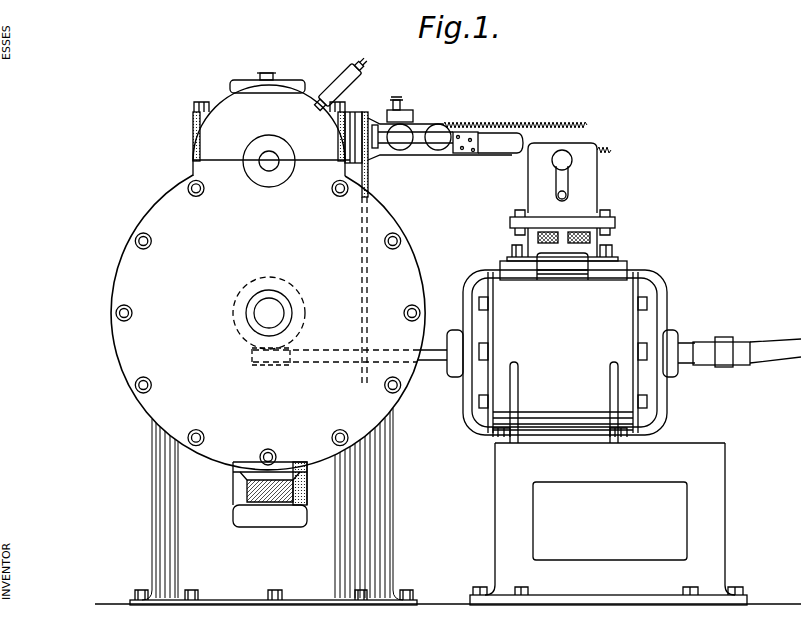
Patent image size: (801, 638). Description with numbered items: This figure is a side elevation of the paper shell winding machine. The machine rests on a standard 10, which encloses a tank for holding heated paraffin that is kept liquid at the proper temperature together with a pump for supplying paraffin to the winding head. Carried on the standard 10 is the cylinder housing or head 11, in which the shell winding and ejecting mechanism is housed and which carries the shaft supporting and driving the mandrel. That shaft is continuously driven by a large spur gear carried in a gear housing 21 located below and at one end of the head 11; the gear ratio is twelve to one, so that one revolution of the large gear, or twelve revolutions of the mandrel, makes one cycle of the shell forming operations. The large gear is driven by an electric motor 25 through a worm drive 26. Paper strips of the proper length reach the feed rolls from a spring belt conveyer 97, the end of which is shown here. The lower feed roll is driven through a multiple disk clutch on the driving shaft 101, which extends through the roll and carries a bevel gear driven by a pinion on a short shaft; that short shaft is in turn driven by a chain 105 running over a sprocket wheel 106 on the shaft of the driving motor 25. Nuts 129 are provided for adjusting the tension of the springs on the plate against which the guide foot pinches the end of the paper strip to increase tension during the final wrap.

The standard 10 is at (170, 517).
The cylinder housing or head 11 is at (215, 140).
The gear housing 21 is at (132, 362).
The electric motor 25 is at (624, 374).
The worm drive 26 is at (240, 341).
The spring belt conveyer 97 is at (588, 125).
The driving shaft 101 is at (407, 142).
The chain 105 is at (368, 183).
The sprocket wheel 106 is at (362, 366).
The nuts 129 is at (358, 65).